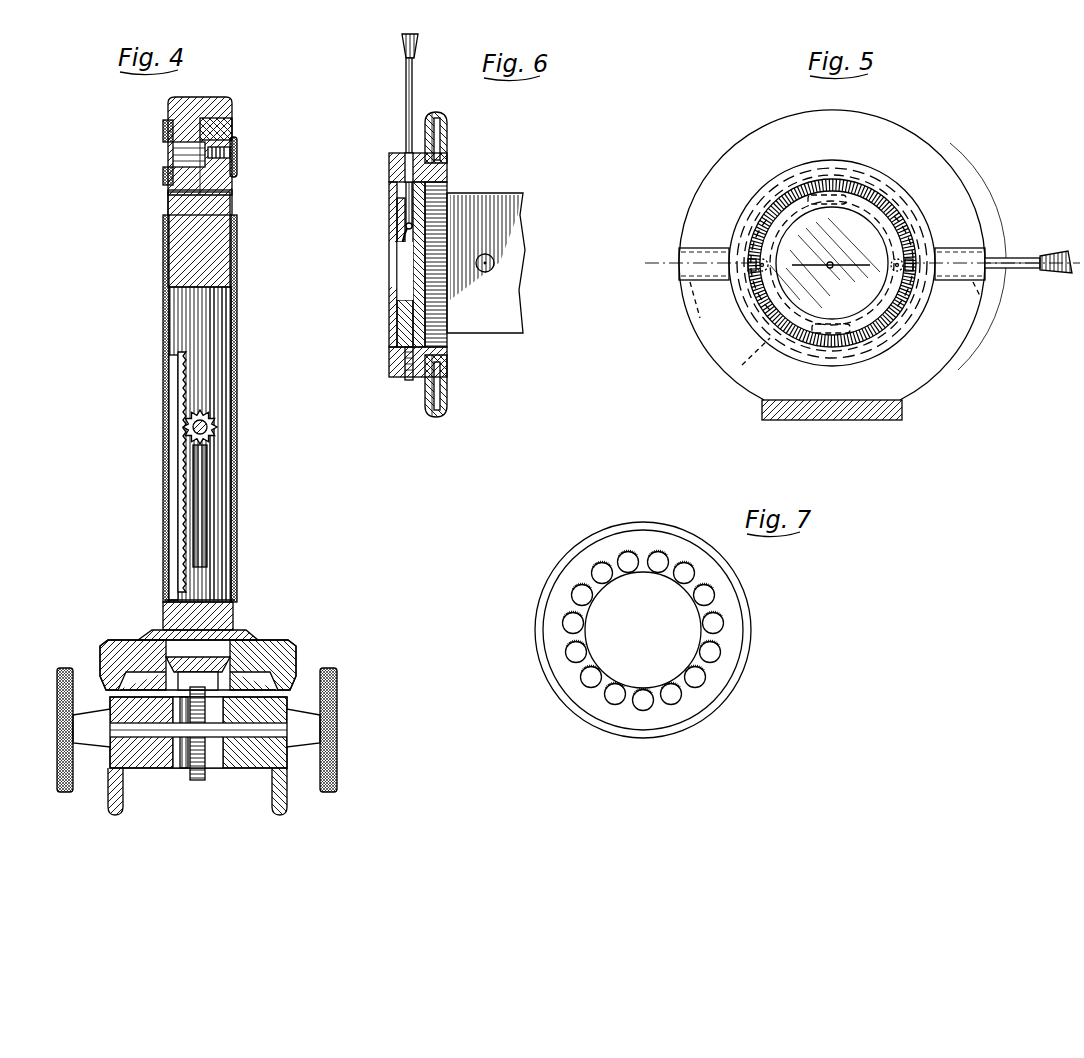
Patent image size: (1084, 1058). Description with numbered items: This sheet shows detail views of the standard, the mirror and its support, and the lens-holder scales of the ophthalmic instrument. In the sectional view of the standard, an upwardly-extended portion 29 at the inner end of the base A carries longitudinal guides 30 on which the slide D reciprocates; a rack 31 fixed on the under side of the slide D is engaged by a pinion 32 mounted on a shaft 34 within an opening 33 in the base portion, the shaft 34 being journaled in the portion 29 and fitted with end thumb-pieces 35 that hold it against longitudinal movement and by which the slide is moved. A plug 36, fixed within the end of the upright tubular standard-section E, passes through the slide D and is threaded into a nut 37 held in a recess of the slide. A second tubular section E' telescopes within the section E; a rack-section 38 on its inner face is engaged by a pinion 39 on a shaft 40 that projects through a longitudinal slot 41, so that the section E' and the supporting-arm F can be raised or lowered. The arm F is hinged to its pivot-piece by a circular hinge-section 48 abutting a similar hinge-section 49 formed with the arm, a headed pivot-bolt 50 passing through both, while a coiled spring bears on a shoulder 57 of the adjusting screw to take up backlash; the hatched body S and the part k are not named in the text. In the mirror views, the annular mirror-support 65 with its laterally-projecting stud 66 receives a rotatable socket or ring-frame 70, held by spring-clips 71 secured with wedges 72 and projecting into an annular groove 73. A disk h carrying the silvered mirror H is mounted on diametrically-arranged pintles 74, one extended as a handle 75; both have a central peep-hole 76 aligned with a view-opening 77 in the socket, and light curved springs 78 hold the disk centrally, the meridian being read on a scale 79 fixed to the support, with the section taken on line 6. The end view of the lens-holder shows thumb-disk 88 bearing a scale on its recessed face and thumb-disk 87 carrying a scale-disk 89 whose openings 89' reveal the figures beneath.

In FIG. 4, the supporting-arm F is at (210, 98).
In FIG. 4, the hinge-section 48 is at (233, 129).
In FIG. 4, the hinge-section 49 is at (182, 125).
In FIG. 4, the headed pivot-bolt 50 is at (180, 158).
In FIG. 4, the shoulder 57 is at (231, 154).
In FIG. 4, the tubular section E' is at (175, 207).
In FIG. 4, the plug S is at (215, 250).
In FIG. 4, the upright tubular standard-section E is at (222, 408).
In FIG. 4, the rack-section 38 is at (180, 496).
In FIG. 4, the longitudinal slot 41 is at (206, 498).
In FIG. 4, the pinion 39 is at (212, 424).
In FIG. 4, the shaft 40 is at (208, 437).
In FIG. 4, the plug 36 is at (236, 607).
In FIG. 4, the nut 37 is at (150, 636).
In FIG. 4, the slide D is at (283, 646).
In FIG. 4, the longitudinal guides 30 is at (104, 660).
In FIG. 4, the rack 31 is at (232, 644).
In FIG. 4, the upwardly-extended portion 29 is at (288, 705).
In FIG. 4, the shaft 34 is at (158, 760).
In FIG. 4, the opening 33 is at (184, 768).
In FIG. 4, the pinion 32 is at (204, 774).
In FIG. 4, the thumb-pieces 35 is at (60, 750).
In FIG. 4, the base A is at (288, 803).
In FIG. 6, the handle 75 is at (403, 46).
In FIG. 5, the handle 75 is at (1050, 256).
In FIG. 6, the pintles 74 is at (408, 108).
In FIG. 5, the pintles 74 is at (1018, 268).
In FIG. 6, the annular mirror-support 65 is at (430, 115).
In FIG. 5, the annular mirror-support 65 is at (930, 370).
In FIG. 6, the spring-clips 71 is at (449, 134).
In FIG. 5, the spring-clips 71 is at (696, 290).
In FIG. 6, the wedges 72 is at (442, 146).
In FIG. 5, the wedges 72 is at (690, 268).
In FIG. 6, the socket or ring-frame 70 is at (390, 168).
In FIG. 5, the socket or ring-frame 70 is at (886, 190).
In FIG. 6, the annular groove 73 is at (448, 174).
In FIG. 5, the annular groove 73 is at (742, 365).
In FIG. 6, the light curved springs 78 is at (400, 296).
In FIG. 5, the light curved springs 78 is at (768, 216).
In FIG. 6, the silvered mirror H is at (450, 242).
In FIG. 5, the silvered mirror H is at (888, 300).
In FIG. 6, the spring seat k is at (415, 235).
In FIG. 6, the central peep-hole 76 is at (410, 266).
In FIG. 5, the central peep-hole 76 is at (834, 264).
In FIG. 6, the view-opening 77 is at (376, 300).
In FIG. 6, the scale 79 is at (424, 398).
In FIG. 6, the stud or arm 66 is at (498, 204).
In FIG. 5, the stud or arm 66 is at (880, 408).
In FIG. 5, the disk h is at (892, 232).
In FIG. 5, the section line 6 is at (655, 263).
In FIG. 7, the thumb-disk 88 is at (748, 596).
In FIG. 7, the thumb-disk 87 is at (680, 634).
In FIG. 7, the scale-disk 89 is at (644, 605).
In FIG. 7, the openings 89' is at (666, 654).